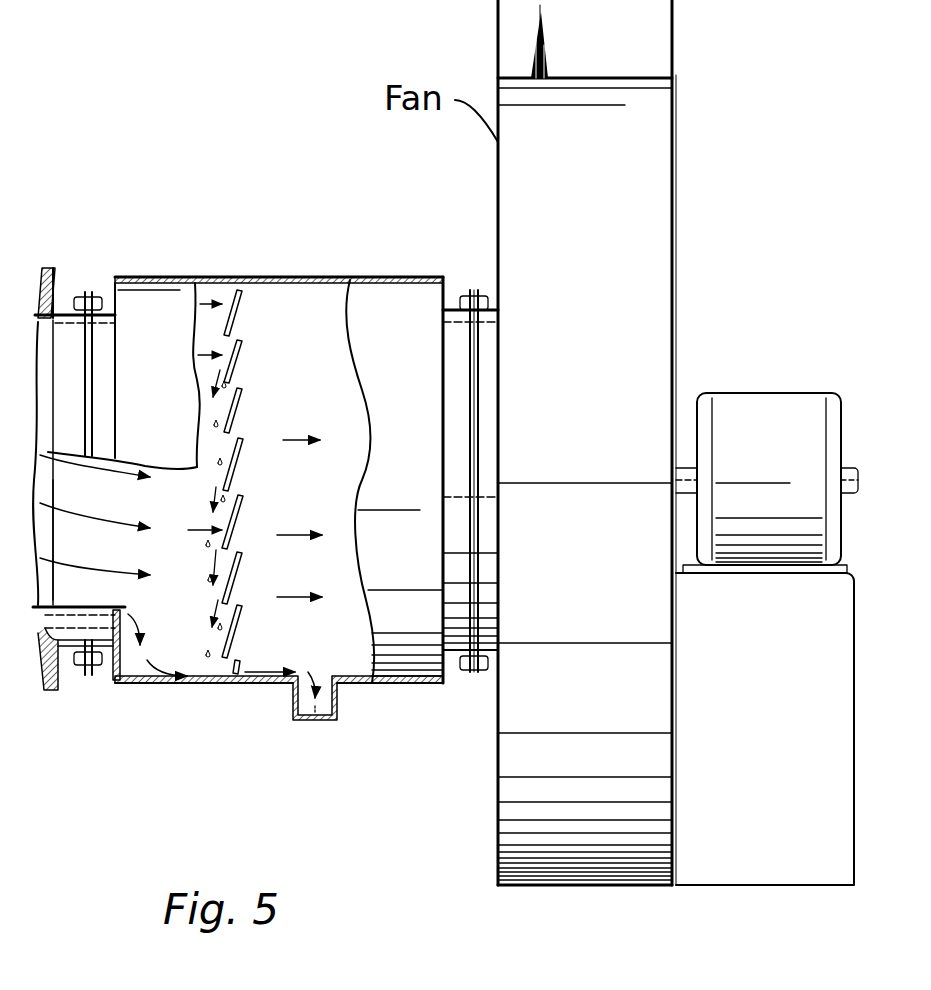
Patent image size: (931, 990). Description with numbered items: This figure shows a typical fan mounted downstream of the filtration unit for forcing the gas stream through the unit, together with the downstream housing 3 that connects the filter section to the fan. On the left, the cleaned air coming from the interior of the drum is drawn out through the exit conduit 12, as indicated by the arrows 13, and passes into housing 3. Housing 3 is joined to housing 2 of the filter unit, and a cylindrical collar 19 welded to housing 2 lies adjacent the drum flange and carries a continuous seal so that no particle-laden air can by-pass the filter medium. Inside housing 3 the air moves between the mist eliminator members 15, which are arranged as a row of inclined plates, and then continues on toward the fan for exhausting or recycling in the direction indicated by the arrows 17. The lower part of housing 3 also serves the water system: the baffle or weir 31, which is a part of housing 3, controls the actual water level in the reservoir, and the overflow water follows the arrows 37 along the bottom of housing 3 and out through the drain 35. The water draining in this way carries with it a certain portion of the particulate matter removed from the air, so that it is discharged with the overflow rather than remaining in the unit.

The housing 2 is at (53, 268).
The cylindrical collar 19 is at (58, 300).
The housing 3 is at (246, 279).
The mist eliminator members 15 is at (238, 361).
The arrows 13 is at (95, 476).
The exit conduit 12 is at (96, 565).
The arrows 17 is at (283, 540).
The baffle or weir 31 is at (125, 622).
The arrows 37 is at (145, 676).
The drain 35 is at (302, 700).